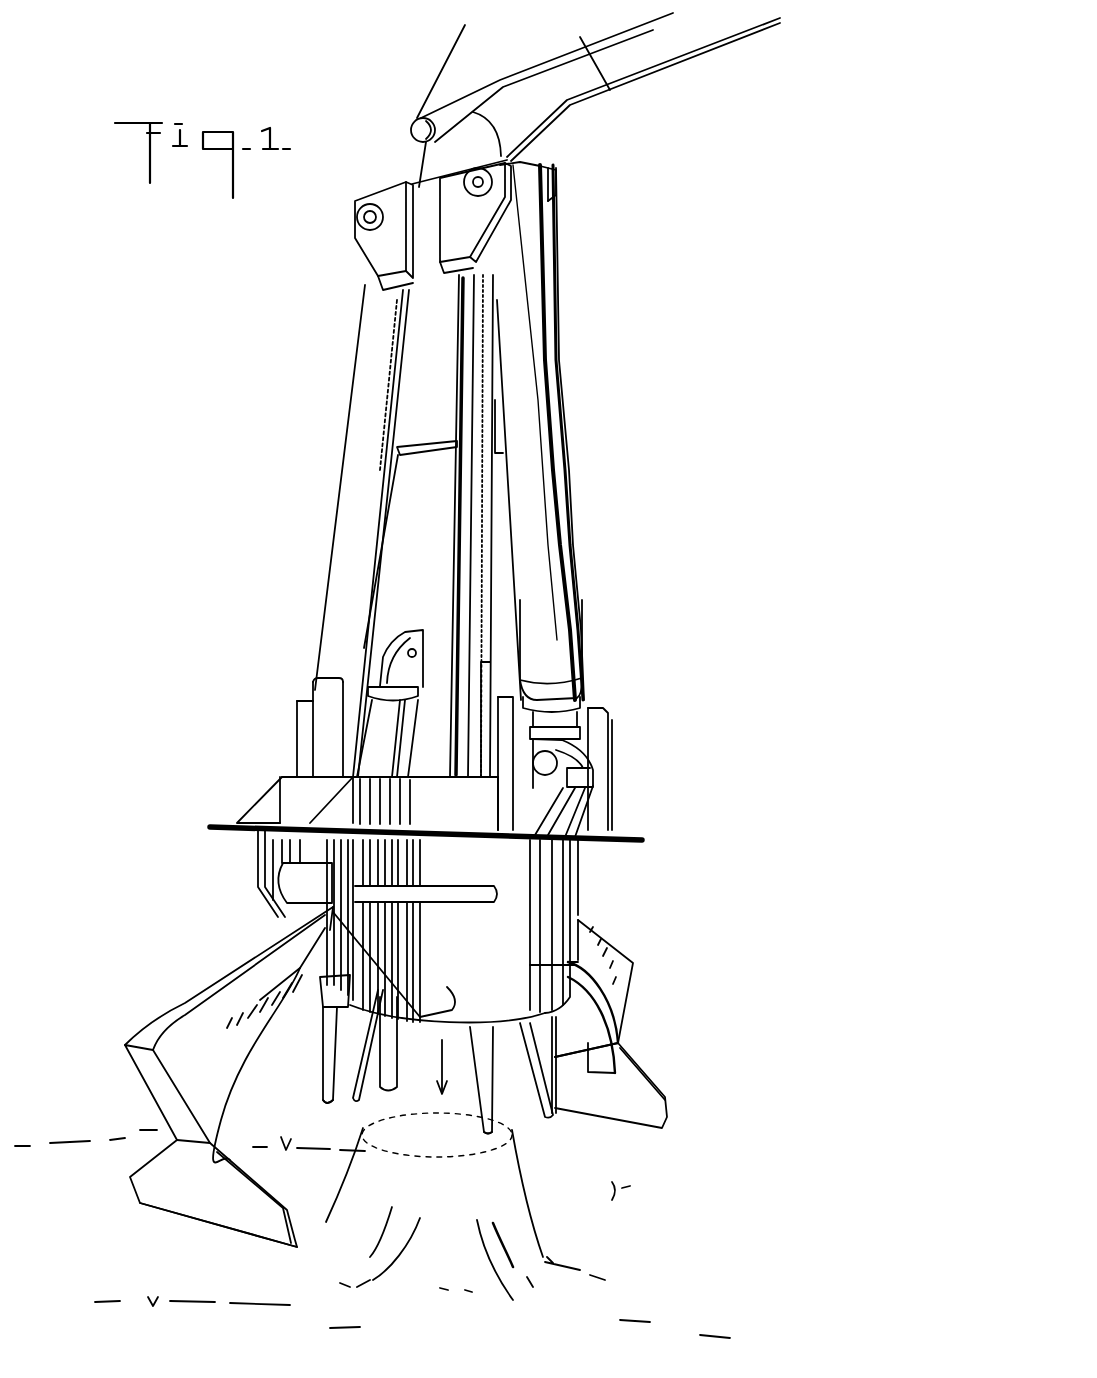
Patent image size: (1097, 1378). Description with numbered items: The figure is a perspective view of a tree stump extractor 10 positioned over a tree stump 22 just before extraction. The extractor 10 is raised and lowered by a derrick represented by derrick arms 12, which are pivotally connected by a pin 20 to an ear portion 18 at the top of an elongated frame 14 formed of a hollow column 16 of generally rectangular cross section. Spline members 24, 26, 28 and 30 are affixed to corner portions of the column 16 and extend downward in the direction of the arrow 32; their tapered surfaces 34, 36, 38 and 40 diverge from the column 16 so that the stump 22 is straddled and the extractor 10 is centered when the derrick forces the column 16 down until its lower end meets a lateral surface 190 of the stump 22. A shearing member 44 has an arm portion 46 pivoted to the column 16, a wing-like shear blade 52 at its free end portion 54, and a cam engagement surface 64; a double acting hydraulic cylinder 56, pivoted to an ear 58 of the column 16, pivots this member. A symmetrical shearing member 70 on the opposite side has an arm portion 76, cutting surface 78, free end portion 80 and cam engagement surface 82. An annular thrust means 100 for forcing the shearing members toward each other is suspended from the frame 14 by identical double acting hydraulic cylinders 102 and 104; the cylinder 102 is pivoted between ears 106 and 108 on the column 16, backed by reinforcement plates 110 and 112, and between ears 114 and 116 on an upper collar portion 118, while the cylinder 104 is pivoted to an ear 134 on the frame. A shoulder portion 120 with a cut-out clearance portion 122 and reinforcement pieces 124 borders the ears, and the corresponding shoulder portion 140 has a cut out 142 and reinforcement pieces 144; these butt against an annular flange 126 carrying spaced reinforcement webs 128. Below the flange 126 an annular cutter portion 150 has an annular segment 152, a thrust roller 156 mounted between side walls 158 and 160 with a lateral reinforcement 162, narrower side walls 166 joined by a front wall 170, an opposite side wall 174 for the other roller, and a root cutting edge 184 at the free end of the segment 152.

The tree stump extractor 10 is at (615, 463).
The derrick arms 12 is at (632, 68).
The elongated frame 14 is at (497, 583).
The hollow column 16 is at (470, 612).
The ear portion 18 is at (426, 163).
The pin 20 is at (411, 118).
The tree stump 22 is at (520, 1188).
The spline member 24 is at (324, 1048).
The spline member 26 is at (362, 1045).
The spline member 28 is at (625, 1035).
The spline member 30 is at (483, 1057).
The downward longitudinal direction arrow 32 is at (441, 1050).
The tapered surface 34 is at (340, 1090).
The tapered surface 36 is at (397, 1087).
The tapered surface 38 is at (530, 1083).
The tapered surface 40 is at (468, 1103).
The shearing member 44 is at (175, 1003).
The arm portion 46 is at (283, 950).
The shear blade 52 is at (200, 1202).
The free end portion 54 is at (153, 1080).
The double acting hydraulic cylinder 56 is at (400, 763).
The ear 58 is at (420, 633).
The cam engagement surface 64 is at (247, 960).
The shearing member 70 is at (622, 948).
The arm portion 76 is at (580, 923).
The cutting surface 78 is at (655, 1120).
The free end portion 80 is at (622, 1015).
The cam engagement surface 82 is at (597, 928).
The thrust means 100 is at (282, 774).
The double acting hydraulic cylinder 102 is at (573, 410).
The double acting hydraulic cylinder 104 is at (342, 440).
The ear 106 is at (497, 168).
The ear 108 is at (557, 192).
The reinforcement plate 110 is at (428, 323).
The reinforcement plate 112 is at (497, 437).
The ear 114 is at (553, 812).
The ear 116 is at (587, 797).
The upper collar portion 118 is at (470, 816).
The shoulder portion 120 is at (588, 668).
The cut-out clearance portion 122 is at (523, 668).
The reinforcement pieces 124 is at (587, 697).
The annular flange 126 is at (645, 838).
The reinforcement webs 128 is at (258, 800).
The ear 134 is at (378, 252).
The shoulder portion 140 is at (322, 684).
The cut out 142 is at (343, 680).
The reinforcement pieces 144 is at (305, 712).
The annular cutter portion 150 is at (540, 977).
The annular segment 152 is at (506, 941).
The thrust roller 156 is at (283, 882).
The side wall 158 is at (397, 870).
The side wall 160 is at (260, 853).
The lateral reinforcement 162 is at (449, 903).
The side wall 166 is at (353, 777).
The front wall 170 is at (316, 800).
The side wall 174 is at (578, 863).
The root cutting edge 184 is at (428, 1003).
The lateral surface 190 is at (397, 1140).